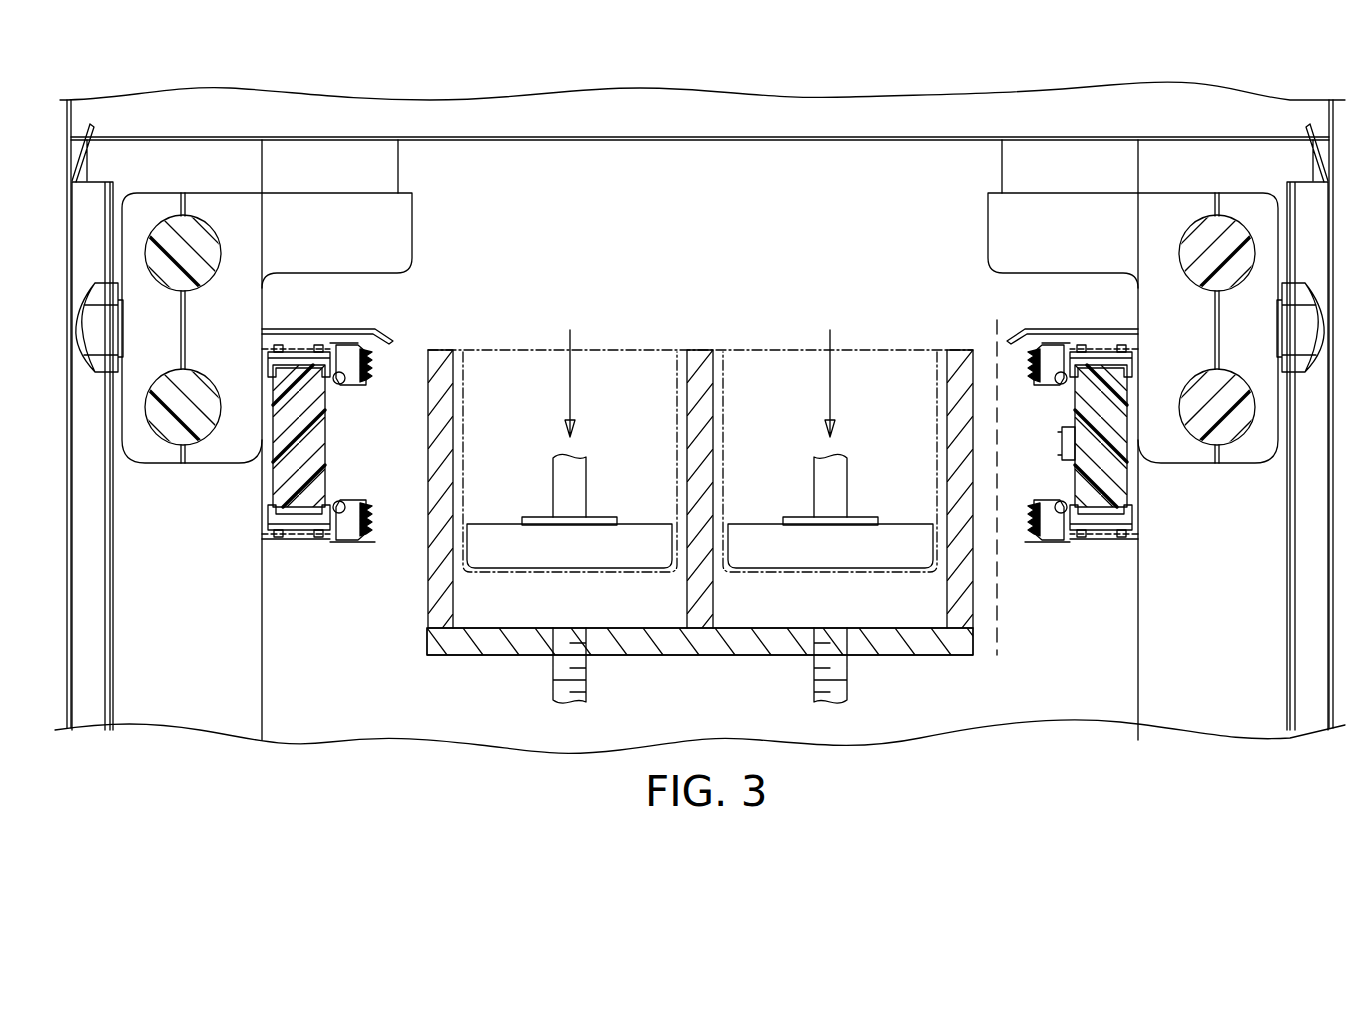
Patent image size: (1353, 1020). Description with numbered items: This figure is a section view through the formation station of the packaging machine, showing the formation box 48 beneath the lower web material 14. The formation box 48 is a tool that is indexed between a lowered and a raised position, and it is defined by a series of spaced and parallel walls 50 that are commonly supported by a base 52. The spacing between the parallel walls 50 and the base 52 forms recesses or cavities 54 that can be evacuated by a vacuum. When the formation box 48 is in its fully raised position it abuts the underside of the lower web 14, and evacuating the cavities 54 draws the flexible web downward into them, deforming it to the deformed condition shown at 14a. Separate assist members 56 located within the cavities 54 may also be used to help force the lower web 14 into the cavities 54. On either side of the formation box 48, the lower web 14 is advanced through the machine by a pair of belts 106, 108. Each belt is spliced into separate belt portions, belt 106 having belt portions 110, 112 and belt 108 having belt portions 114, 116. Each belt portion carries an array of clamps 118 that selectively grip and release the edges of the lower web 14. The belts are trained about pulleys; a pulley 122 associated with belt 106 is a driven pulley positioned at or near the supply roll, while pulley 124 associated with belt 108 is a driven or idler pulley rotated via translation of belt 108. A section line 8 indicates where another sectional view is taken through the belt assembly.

The section line 8- 8 is at (1055, 662).
The lower web material 14 is at (777, 352).
The deformed condition of the lower web 14a is at (787, 572).
The formation box 48 is at (664, 503).
The walls 50 is at (951, 372).
The base 52 is at (703, 655).
The cavities 54 is at (912, 600).
The assist members 56 is at (885, 542).
The belt 106 is at (272, 491).
The belt 108 is at (1115, 355).
The belt portion 110 is at (283, 542).
The belt portion 112 is at (307, 543).
The belt portion 114 is at (1092, 532).
The belt portion 116 is at (1132, 542).
The clamps 118 is at (1030, 500).
The pulley 122 is at (283, 473).
The pulley 124 is at (1108, 483).